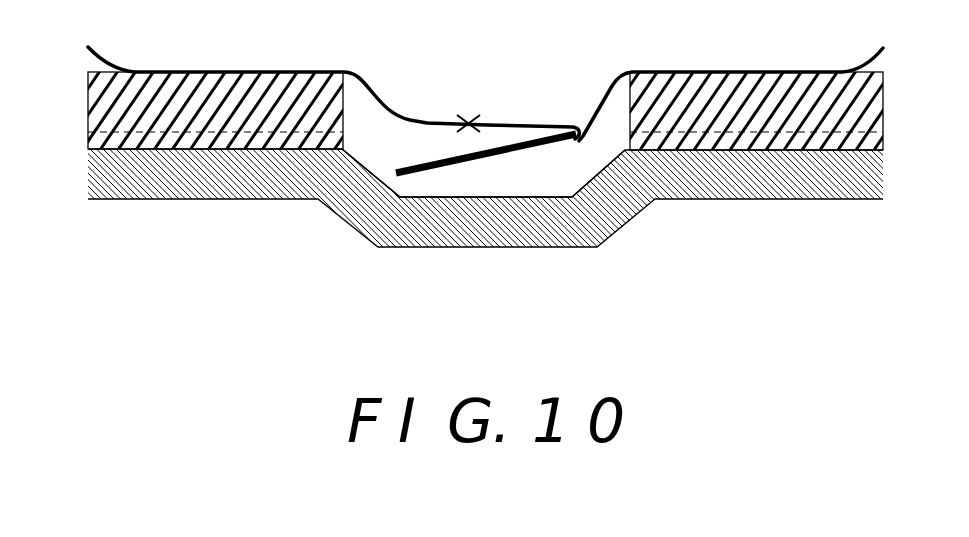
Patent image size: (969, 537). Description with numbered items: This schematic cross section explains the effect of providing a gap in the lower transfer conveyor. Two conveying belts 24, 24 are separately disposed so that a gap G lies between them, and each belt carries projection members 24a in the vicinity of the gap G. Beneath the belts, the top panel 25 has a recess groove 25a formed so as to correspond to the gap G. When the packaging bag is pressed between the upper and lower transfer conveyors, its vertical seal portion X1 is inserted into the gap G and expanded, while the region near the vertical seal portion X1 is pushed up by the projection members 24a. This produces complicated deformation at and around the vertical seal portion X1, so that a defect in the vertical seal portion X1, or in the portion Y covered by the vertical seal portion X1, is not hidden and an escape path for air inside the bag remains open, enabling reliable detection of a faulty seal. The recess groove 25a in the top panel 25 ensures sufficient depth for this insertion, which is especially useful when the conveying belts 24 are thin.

The conveying belt 24 is at (100, 143).
The projection member 24a is at (115, 103).
The top panel 25 is at (125, 199).
The recess groove 25a is at (555, 197).
The vertical seal portion X1 is at (423, 160).
The portion covered by the vertical seal portion Y is at (478, 92).
The gap G is at (532, 103).